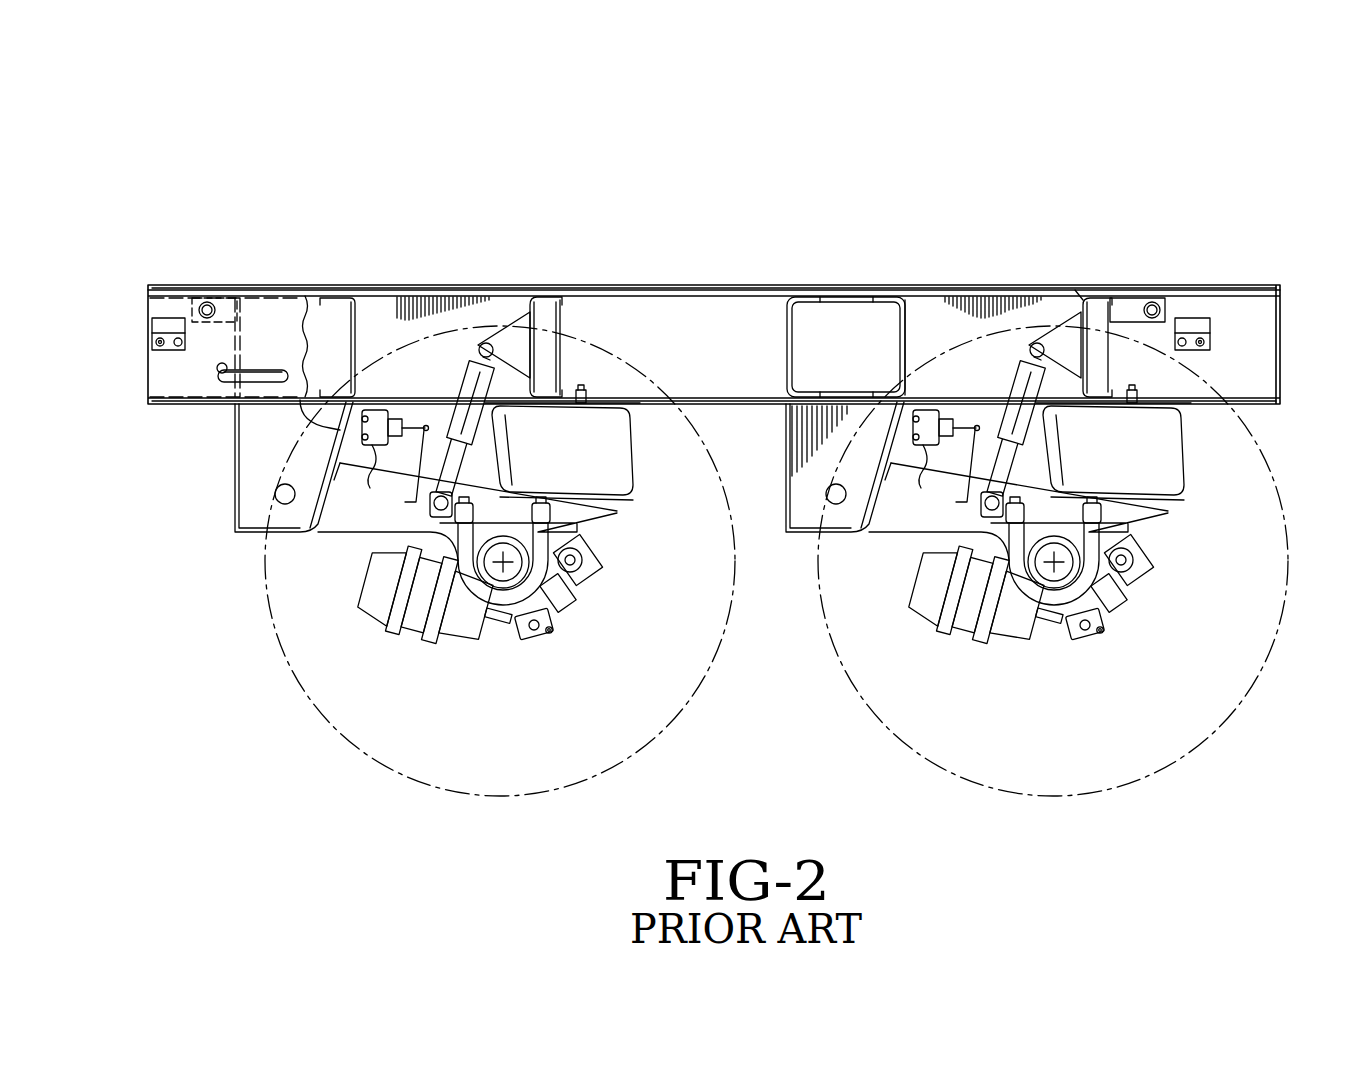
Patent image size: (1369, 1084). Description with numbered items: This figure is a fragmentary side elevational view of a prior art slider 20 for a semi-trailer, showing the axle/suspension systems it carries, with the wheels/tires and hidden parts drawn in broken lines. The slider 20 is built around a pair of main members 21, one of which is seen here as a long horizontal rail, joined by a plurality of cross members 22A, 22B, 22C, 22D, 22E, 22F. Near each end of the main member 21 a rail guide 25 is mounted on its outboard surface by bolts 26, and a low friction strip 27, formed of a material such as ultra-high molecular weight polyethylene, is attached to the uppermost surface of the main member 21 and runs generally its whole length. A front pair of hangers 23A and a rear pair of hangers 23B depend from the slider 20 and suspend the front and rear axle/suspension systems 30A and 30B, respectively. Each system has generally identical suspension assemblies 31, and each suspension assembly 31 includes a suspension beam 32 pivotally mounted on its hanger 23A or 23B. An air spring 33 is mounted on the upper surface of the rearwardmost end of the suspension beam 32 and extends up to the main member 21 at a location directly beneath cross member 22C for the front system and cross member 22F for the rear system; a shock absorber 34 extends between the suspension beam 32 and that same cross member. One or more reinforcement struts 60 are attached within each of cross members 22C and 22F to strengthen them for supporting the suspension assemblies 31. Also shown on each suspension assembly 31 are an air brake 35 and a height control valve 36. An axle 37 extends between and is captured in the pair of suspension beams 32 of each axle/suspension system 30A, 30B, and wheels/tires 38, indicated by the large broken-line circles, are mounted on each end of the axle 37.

The slider 20 is at (667, 185).
The main member 21 is at (195, 403).
The cross member 22A is at (232, 347).
The cross member 22B is at (368, 332).
The cross member 22C is at (521, 289).
The cross member 22D is at (777, 333).
The cross member 22E is at (911, 333).
The cross member 22F is at (1076, 292).
The front hanger 23A is at (230, 505).
The rear hanger 23B is at (790, 545).
The rail guide 25 is at (167, 323).
The bolt 26 is at (165, 341).
The low friction strip 27 is at (160, 285).
The front axle/suspension system 30A is at (608, 530).
The rear axle/suspension system 30B is at (1159, 530).
The suspension assembly 31 is at (743, 559).
The suspension beam 32 is at (590, 538).
The air spring 33 is at (862, 442).
The shock absorber 34 is at (739, 414).
The air brake 35 is at (714, 620).
The height control valve 36 is at (666, 461).
The axle 37 is at (837, 587).
The wheels/tires 38 is at (270, 600).
The reinforcement strut 60 is at (548, 318).